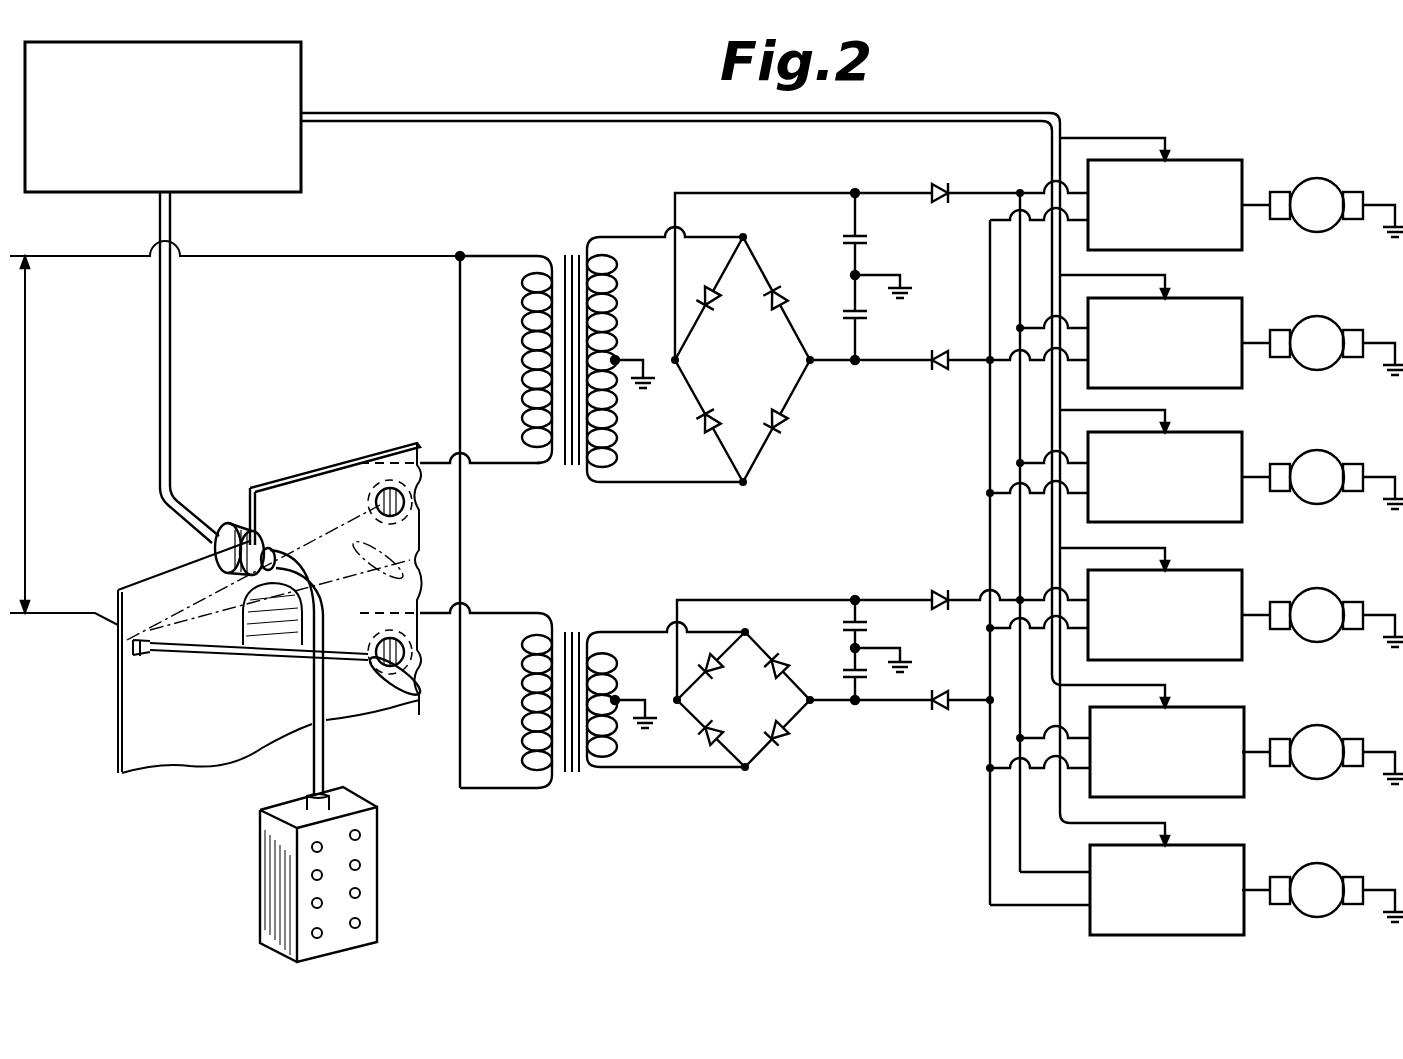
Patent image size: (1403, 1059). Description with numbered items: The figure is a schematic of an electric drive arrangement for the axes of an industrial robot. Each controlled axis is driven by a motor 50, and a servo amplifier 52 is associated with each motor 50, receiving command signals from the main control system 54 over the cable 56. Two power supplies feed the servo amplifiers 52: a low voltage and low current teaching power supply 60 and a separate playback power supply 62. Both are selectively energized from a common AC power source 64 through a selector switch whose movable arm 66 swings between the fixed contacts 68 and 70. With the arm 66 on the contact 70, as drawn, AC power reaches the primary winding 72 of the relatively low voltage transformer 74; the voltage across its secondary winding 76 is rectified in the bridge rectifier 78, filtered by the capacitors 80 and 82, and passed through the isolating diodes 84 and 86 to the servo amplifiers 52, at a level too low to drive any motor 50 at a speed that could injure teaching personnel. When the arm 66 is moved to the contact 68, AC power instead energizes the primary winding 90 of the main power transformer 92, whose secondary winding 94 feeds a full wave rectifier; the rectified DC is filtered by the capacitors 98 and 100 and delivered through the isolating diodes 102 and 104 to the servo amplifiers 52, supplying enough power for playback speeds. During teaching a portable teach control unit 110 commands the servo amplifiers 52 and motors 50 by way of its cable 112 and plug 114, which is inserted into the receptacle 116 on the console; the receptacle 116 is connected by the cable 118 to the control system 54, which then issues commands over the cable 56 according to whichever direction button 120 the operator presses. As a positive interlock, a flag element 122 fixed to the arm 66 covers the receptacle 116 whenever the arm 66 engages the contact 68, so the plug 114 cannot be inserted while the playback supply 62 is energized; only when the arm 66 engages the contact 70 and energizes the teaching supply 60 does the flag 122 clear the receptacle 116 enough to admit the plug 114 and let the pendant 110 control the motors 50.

The motor 50 is at (1336, 180).
The servo amplifier 52 is at (1215, 160).
The main control system 54 is at (302, 65).
The cable 56 is at (540, 113).
The low voltage and low current power supply 60 is at (756, 681).
The playback power supply 62 is at (748, 334).
The AC power source 64 is at (12, 428).
The movable arm 66 is at (228, 668).
The fixed contact 68 is at (404, 500).
The fixed contact 70 is at (404, 650).
The primary winding 72 is at (522, 712).
The low voltage transformer 74 is at (574, 686).
The secondary winding 76 is at (618, 680).
The bridge rectifier 78 is at (743, 699).
The capacitor 80 is at (850, 620).
The capacitor 82 is at (848, 672).
The isolating diode 84 is at (937, 590).
The isolating diode 86 is at (940, 712).
The primary winding 90 is at (522, 368).
The main power transformer 92 is at (563, 340).
The secondary winding 94 is at (618, 322).
The capacitor 98 is at (850, 234).
The capacitor 100 is at (848, 313).
The isolating diode 102 is at (935, 180).
The isolating diode 104 is at (940, 372).
The portable teach control unit 110 is at (260, 867).
The cable 112 is at (325, 748).
The plug 114 is at (268, 505).
The receptacle 116 is at (215, 555).
The cable 118 is at (170, 382).
The direction buttons 120 is at (360, 865).
The flag element 122 is at (282, 625).